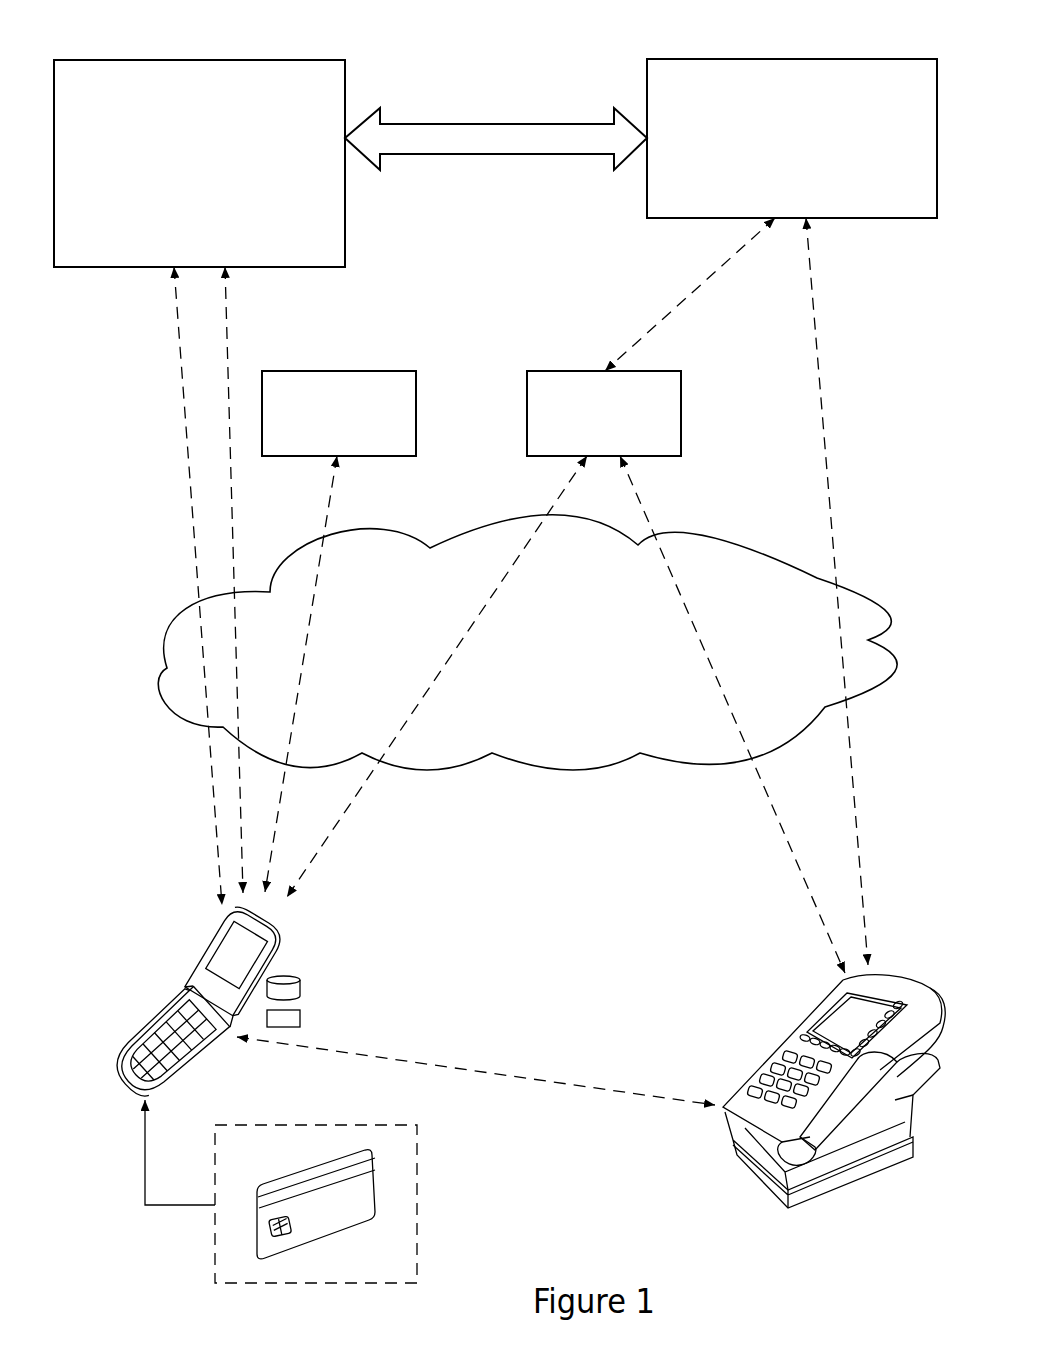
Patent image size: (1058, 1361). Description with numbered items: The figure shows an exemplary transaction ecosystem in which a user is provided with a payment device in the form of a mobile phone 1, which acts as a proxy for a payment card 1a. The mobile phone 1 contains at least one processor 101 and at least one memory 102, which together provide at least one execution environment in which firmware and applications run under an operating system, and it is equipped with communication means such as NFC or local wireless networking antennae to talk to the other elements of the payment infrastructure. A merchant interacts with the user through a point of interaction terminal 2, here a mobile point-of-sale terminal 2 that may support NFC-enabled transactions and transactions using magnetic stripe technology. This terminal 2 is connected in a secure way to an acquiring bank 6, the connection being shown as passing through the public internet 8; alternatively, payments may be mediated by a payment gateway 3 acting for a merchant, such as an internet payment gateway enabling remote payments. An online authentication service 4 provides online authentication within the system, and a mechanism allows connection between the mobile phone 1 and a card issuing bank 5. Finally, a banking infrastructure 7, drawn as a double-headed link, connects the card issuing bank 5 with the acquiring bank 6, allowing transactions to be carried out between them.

The mobile phone 1 is at (168, 1002).
The payment card 1a is at (418, 1143).
The point of interaction terminal 2 is at (812, 1017).
The payment gateway 3 is at (545, 371).
The online authentication service 4 is at (393, 371).
The card issuing bank 5 is at (322, 60).
The acquiring bank 6 is at (913, 59).
The banking infrastructure 7 is at (493, 124).
The public internet 8 is at (723, 540).
The processor 101 is at (302, 1020).
The memory 102 is at (302, 985).